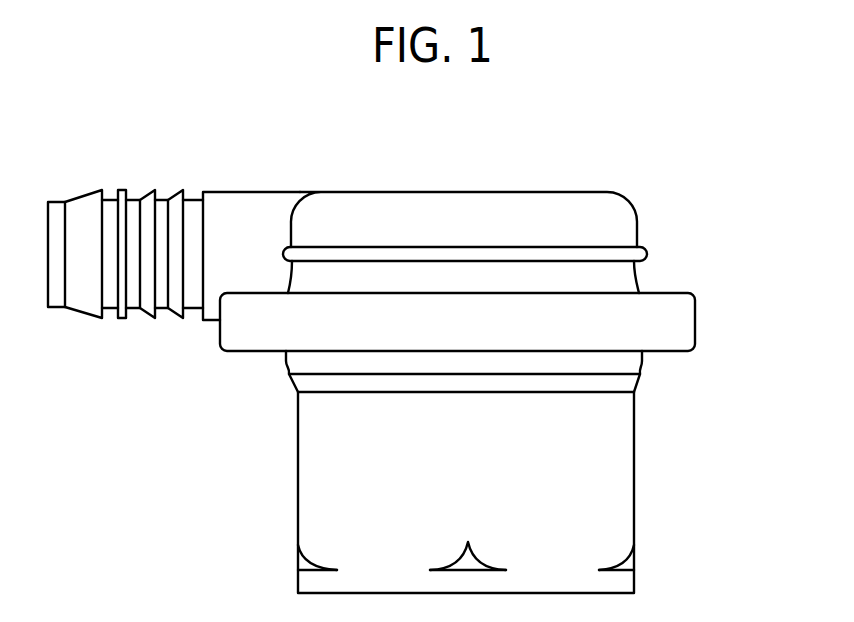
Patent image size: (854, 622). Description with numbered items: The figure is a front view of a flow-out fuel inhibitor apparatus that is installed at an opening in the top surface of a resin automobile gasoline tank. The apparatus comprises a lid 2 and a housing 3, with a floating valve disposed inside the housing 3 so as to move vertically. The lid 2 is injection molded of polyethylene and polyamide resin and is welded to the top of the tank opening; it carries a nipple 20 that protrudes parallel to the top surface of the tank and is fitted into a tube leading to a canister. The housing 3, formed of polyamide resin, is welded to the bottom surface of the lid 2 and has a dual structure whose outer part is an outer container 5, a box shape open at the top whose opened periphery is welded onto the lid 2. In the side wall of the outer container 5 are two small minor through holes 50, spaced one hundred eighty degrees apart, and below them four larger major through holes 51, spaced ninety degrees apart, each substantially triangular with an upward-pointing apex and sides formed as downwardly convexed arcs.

The lid 2 is at (600, 191).
The housing 3 is at (665, 480).
The outer container 5 is at (637, 584).
The nipple 20 is at (84, 194).
The minor through holes 50 is at (283, 363).
The major through holes 51 is at (298, 553).